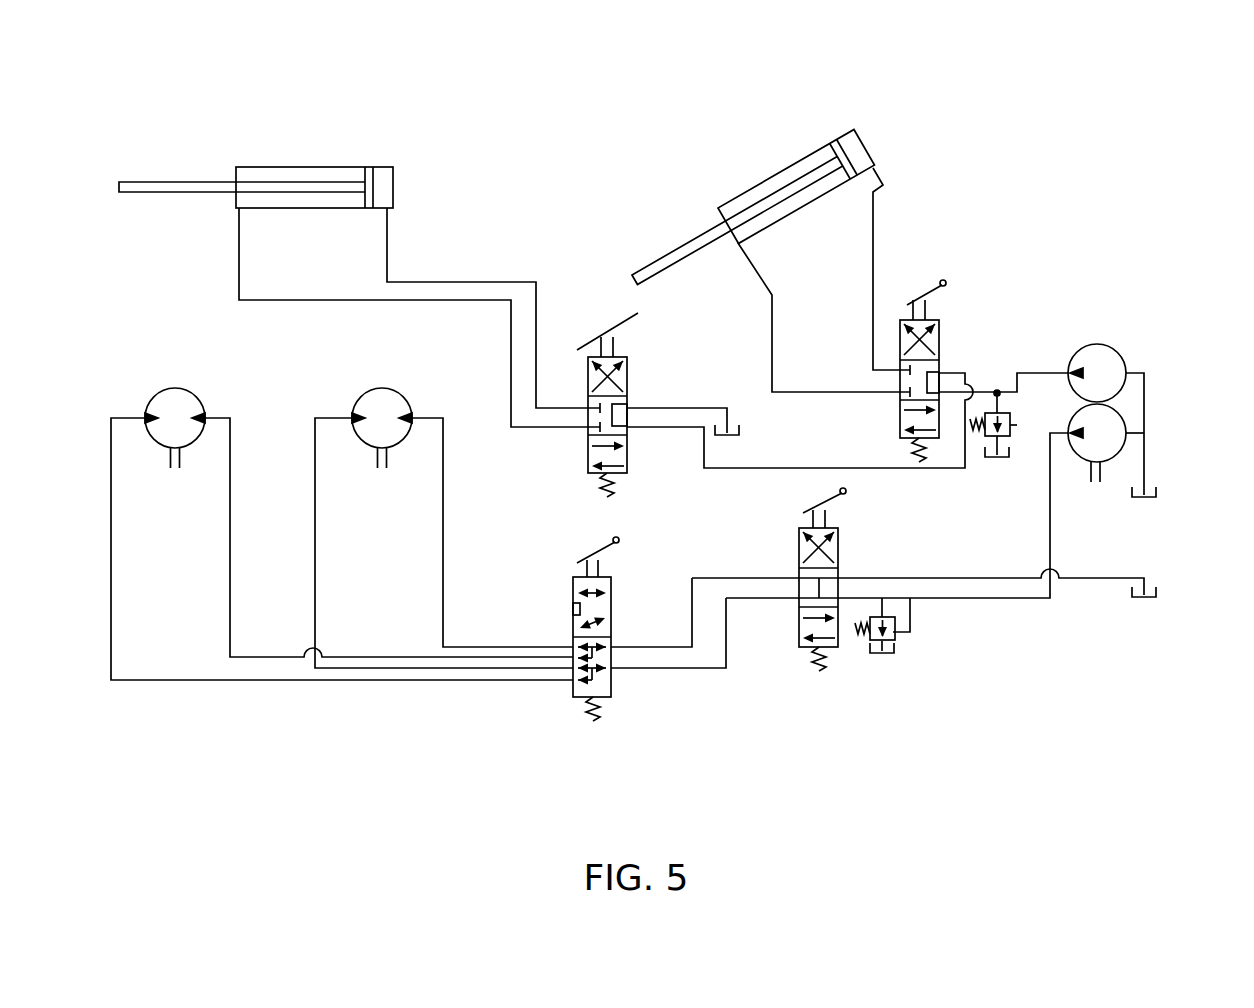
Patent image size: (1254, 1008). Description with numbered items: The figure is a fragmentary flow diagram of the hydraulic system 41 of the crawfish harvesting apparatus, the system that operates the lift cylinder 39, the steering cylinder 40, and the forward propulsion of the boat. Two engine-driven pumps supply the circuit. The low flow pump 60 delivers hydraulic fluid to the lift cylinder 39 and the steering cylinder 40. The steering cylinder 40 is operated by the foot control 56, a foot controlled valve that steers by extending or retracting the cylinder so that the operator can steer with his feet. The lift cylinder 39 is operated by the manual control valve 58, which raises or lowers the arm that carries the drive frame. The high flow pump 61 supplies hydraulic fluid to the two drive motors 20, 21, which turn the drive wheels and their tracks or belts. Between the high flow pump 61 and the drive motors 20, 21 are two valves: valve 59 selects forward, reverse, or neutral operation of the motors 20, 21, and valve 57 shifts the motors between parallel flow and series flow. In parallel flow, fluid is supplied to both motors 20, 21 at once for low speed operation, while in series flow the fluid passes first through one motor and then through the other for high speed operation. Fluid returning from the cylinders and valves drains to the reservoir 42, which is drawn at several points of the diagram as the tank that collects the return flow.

The hydraulic system 41 is at (1081, 100).
The steering cylinder 40 is at (318, 167).
The lift cylinder 39 is at (805, 155).
The foot control 56 is at (627, 385).
The manual control valve 58 is at (940, 342).
The valve 59 is at (838, 553).
The valve 57 is at (611, 603).
The drive motor 21 is at (178, 388).
The drive motor 20 is at (388, 388).
The low flow pump 60 is at (1110, 344).
The high flow pump 61 is at (1078, 457).
The reservoir 42 is at (1144, 506).